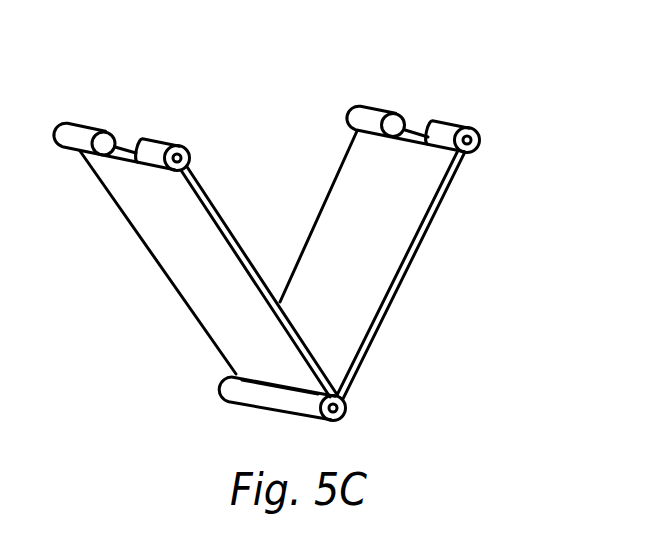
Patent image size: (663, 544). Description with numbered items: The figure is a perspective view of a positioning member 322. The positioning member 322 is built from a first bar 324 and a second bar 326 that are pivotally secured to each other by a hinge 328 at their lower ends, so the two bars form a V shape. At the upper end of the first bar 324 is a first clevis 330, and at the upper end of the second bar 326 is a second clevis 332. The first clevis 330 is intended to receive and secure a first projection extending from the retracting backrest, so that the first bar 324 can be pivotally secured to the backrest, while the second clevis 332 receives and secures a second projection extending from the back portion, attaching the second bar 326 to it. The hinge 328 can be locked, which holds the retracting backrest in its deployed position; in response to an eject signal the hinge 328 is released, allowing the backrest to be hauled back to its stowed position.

The positioning member 322 is at (287, 153).
The first bar 324 is at (207, 260).
The second bar 326 is at (372, 235).
The hinge 328 is at (345, 412).
The first clevis 330 is at (132, 141).
The second clevis 332 is at (415, 128).